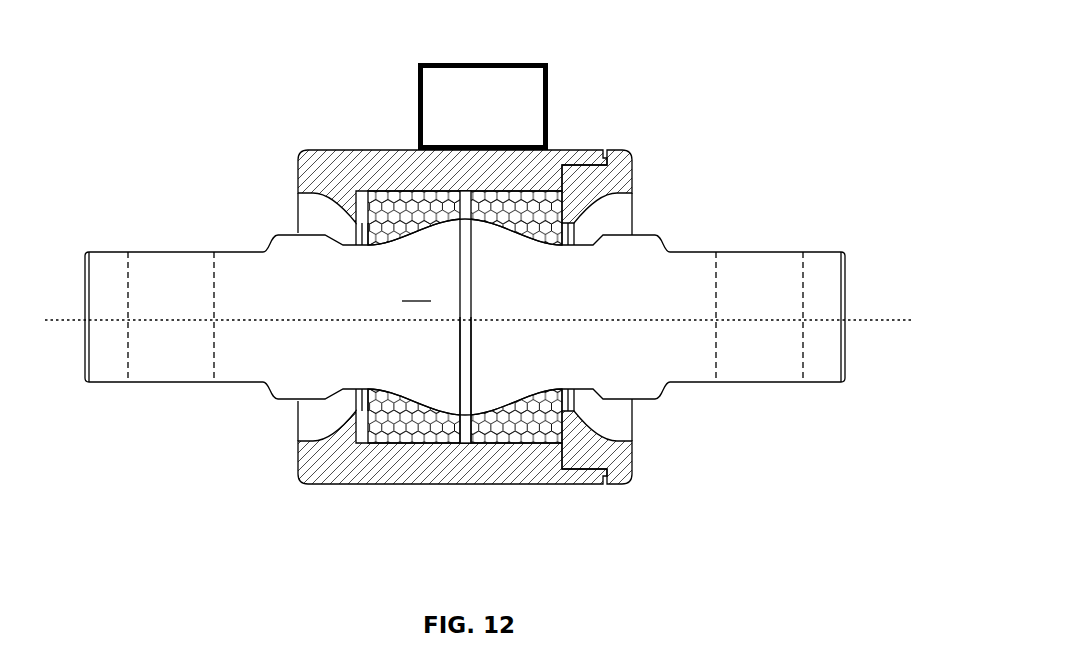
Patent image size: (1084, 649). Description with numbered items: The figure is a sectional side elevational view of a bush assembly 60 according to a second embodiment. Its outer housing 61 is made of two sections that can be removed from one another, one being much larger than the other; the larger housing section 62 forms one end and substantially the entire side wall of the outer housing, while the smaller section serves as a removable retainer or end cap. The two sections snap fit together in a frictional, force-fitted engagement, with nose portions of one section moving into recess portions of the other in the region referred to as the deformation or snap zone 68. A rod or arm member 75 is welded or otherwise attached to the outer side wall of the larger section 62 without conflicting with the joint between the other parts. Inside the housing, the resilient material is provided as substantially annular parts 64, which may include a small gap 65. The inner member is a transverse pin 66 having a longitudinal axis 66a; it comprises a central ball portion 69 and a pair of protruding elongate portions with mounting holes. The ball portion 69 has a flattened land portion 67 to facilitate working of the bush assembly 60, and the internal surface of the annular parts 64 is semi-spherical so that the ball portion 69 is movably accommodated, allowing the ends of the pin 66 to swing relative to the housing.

The bush assembly 60 is at (370, 74).
The outer housing 61 is at (287, 155).
The larger housing section 62 is at (342, 136).
The annular parts 64 is at (387, 430).
The small gap 65 is at (460, 455).
The transverse pin 66 is at (250, 306).
The longitudinal axis 66a is at (885, 313).
The flattened land portion 67 is at (470, 356).
The snap zone 68 is at (655, 154).
The central ball portion 69 is at (416, 289).
The rod or arm member 75 is at (453, 52).